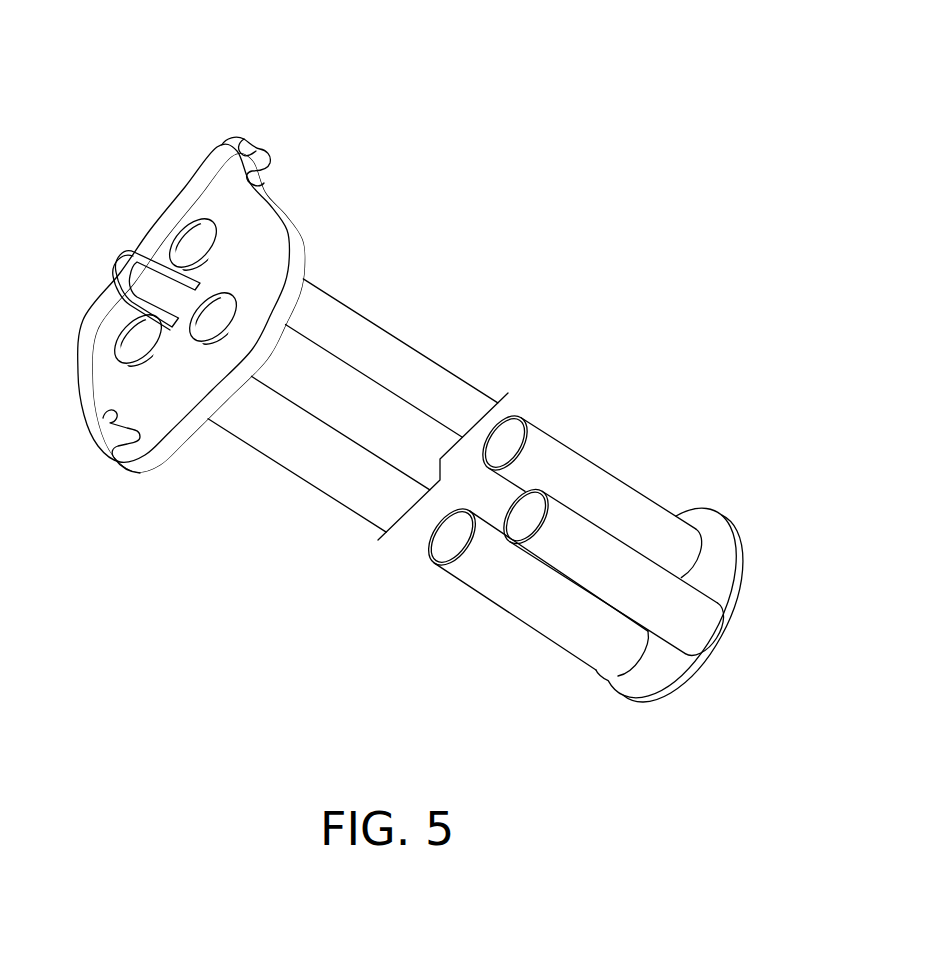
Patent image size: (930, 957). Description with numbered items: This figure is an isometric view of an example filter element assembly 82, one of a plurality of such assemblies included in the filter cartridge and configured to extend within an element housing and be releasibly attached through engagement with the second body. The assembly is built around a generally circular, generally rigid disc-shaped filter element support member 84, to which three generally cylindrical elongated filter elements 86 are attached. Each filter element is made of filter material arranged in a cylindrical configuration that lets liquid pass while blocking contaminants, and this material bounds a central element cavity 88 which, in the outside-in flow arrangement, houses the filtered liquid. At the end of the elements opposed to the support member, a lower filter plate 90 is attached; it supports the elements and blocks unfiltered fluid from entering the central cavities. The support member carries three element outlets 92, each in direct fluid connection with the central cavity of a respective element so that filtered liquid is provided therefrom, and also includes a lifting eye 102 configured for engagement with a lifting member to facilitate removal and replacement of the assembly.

The filter element assembly 82 is at (492, 172).
The filter element support member 84 is at (219, 147).
The filter elements 86 is at (593, 470).
The central element cavity 88 is at (520, 517).
The lower filter plate 90 is at (716, 532).
The element outlets 92 is at (228, 300).
The lifting eye 102 is at (133, 266).